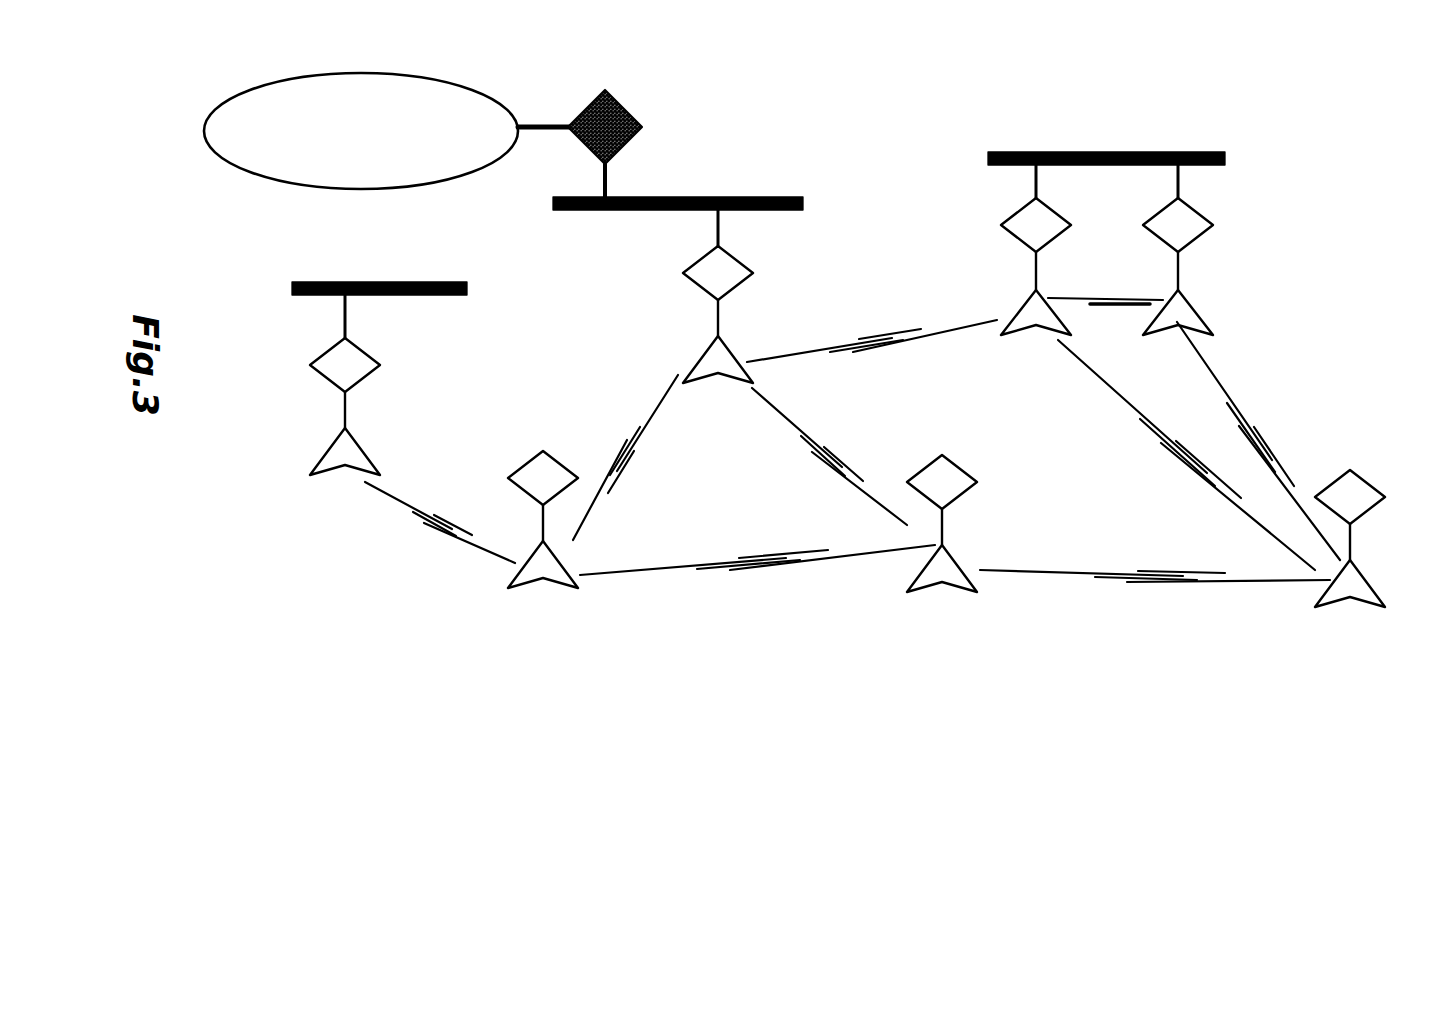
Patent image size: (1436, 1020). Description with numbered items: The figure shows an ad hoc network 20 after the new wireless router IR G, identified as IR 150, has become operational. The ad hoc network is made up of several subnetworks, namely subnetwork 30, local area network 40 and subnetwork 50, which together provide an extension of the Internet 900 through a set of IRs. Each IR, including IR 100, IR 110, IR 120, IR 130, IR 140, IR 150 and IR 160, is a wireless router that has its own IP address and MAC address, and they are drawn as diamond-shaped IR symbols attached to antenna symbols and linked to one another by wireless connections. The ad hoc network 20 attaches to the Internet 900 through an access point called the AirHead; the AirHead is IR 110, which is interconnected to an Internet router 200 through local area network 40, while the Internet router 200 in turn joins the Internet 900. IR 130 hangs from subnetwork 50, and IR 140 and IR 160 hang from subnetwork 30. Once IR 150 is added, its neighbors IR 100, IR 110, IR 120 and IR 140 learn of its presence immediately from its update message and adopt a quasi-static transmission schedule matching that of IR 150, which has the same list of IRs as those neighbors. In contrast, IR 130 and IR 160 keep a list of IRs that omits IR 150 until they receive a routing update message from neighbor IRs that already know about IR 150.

The ad hoc network 20 is at (770, 622).
The subnetwork 30 is at (1106, 143).
The local area network 40 is at (678, 183).
The subnetwork 50 is at (379, 270).
The IR 100 is at (1368, 548).
The IR 110 is at (695, 296).
The IR 120 is at (525, 494).
The IR 130 is at (346, 385).
The IR 140 is at (1005, 250).
The IR 150 is at (923, 529).
The IR 160 is at (1203, 250).
The Internet router 200 is at (580, 125).
The Internet 900 is at (361, 131).